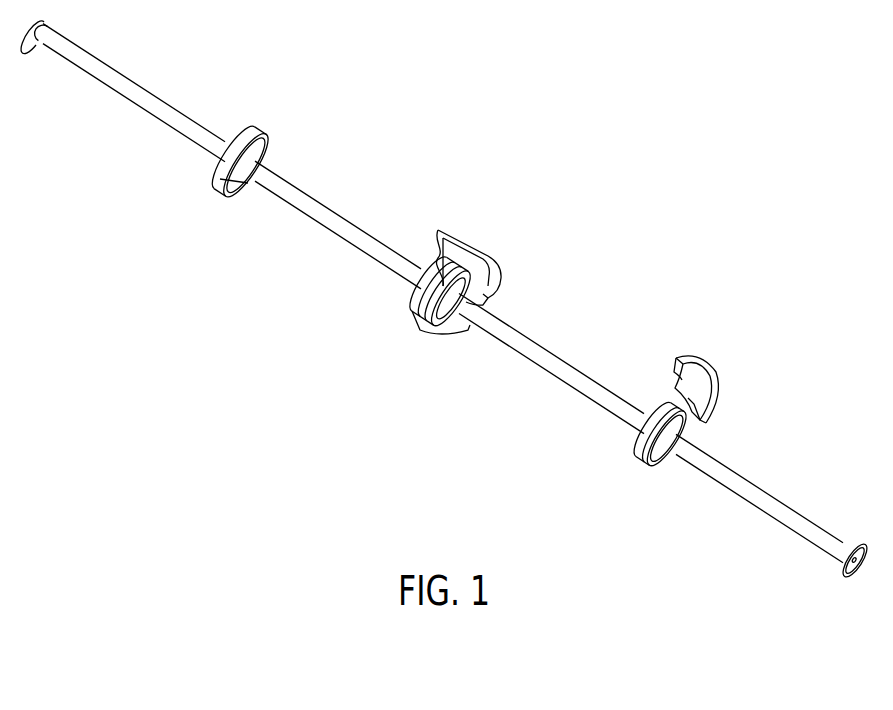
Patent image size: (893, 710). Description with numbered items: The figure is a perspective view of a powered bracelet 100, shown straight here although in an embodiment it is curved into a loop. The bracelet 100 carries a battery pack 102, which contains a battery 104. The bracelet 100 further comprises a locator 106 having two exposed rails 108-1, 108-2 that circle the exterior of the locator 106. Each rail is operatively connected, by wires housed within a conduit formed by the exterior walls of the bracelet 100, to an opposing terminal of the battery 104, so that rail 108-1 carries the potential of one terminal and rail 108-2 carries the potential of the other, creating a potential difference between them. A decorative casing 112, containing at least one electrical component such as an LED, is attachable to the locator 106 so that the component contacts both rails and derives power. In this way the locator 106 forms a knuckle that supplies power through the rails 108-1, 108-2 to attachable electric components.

The bracelet 100 is at (383, 270).
The battery pack 102 is at (452, 221).
The battery 104 is at (437, 300).
The locator 106 is at (492, 290).
The rail 108-1 is at (657, 407).
The rail 108-2 is at (718, 415).
The decorative casing 112 is at (217, 132).